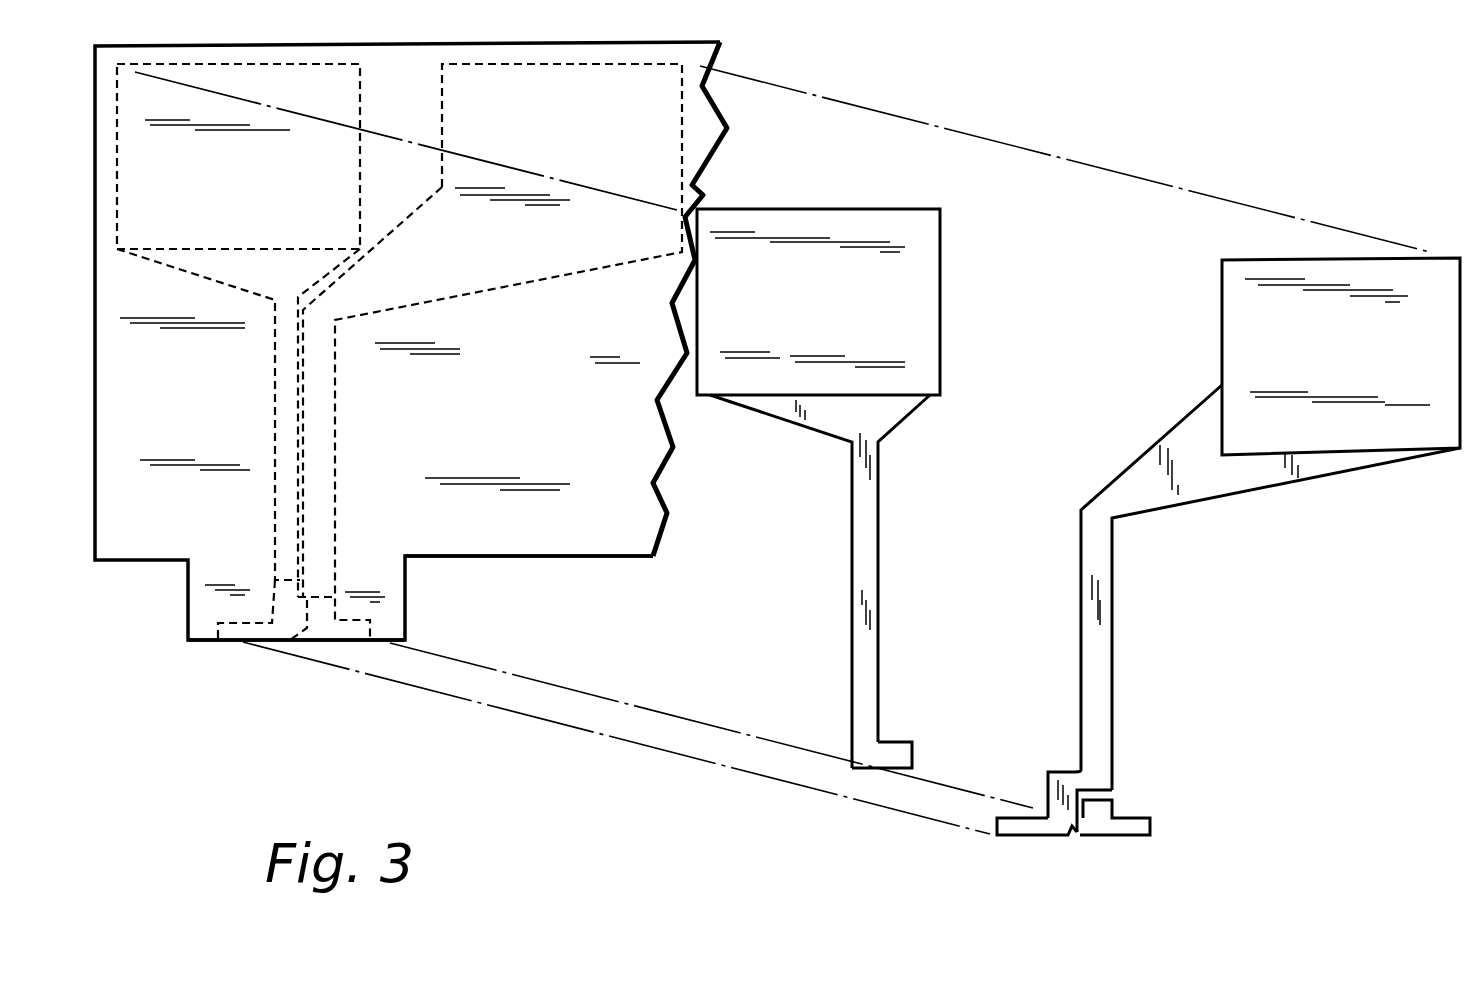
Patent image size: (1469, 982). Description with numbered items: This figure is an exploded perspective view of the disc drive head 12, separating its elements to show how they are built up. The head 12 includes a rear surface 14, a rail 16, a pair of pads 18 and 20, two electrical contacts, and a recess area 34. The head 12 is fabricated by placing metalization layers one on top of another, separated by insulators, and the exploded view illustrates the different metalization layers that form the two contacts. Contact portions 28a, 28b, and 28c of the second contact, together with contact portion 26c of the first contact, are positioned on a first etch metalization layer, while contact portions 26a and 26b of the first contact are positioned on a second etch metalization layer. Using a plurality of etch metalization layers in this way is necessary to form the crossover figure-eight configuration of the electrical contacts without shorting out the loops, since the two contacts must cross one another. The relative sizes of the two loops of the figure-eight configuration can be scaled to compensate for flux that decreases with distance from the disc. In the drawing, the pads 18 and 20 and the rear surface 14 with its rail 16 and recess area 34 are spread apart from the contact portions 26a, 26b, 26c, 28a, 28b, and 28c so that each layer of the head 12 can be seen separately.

The disc drive head 12 is at (738, 57).
The rear surface 14 is at (545, 398).
The rail 16 is at (407, 618).
The pad 18 is at (845, 316).
The pad 20 is at (1368, 364).
The contact portion 26a is at (858, 538).
The contact portion 26b is at (893, 753).
The contact portion 26c is at (1115, 828).
The contact portion 28a is at (1098, 588).
The contact portion 28b is at (1080, 782).
The contact portion 28c is at (1058, 822).
The recess area 34 is at (537, 562).